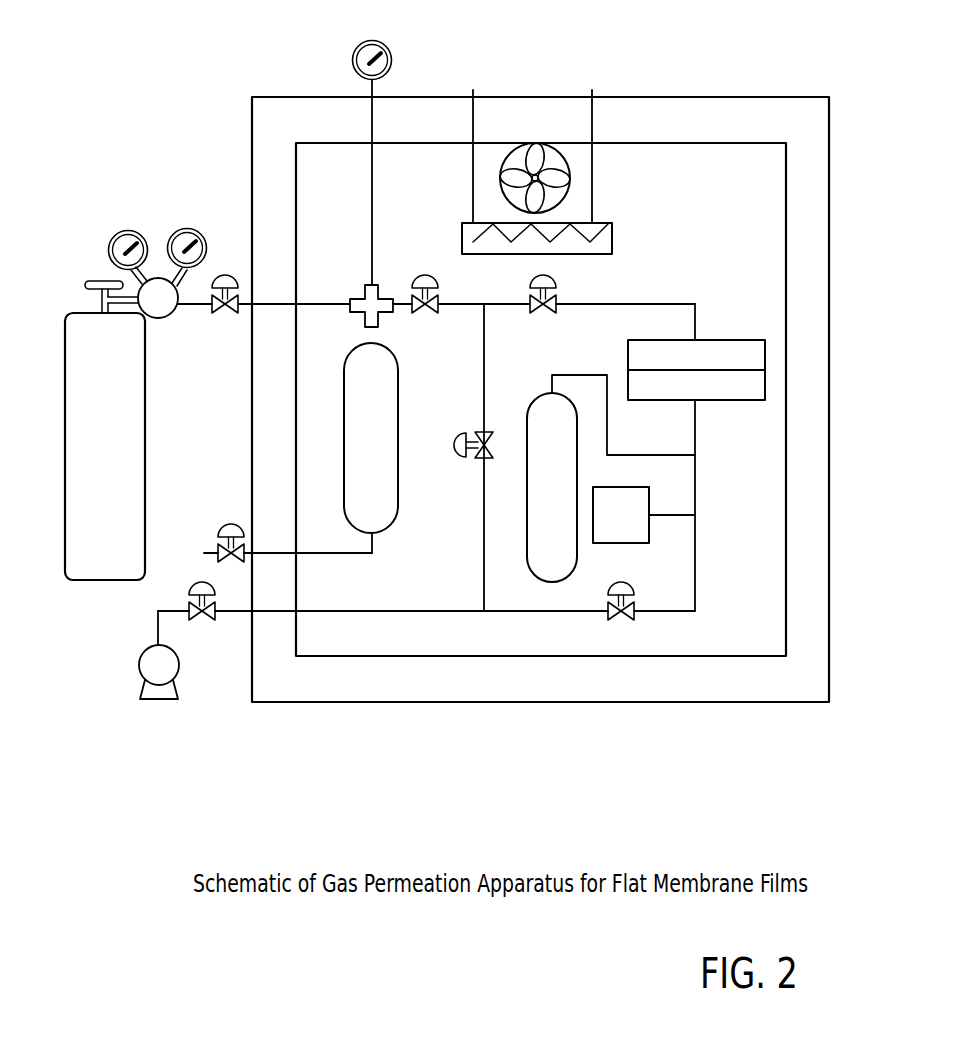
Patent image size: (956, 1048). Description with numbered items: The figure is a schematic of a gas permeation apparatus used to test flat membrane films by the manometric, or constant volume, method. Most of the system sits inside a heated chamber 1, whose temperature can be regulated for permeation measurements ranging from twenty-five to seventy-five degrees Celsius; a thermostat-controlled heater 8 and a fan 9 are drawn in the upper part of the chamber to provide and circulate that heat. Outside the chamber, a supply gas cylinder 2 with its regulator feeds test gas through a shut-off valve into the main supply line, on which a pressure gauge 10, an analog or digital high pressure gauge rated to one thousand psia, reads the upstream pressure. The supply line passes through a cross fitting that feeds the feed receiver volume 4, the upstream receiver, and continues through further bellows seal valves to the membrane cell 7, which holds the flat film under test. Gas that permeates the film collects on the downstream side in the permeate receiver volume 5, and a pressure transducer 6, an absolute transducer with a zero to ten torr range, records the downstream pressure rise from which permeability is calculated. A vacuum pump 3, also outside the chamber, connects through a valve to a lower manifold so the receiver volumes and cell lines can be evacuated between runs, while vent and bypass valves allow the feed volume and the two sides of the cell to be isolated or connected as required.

The heated chamber 1 is at (816, 148).
The supply gas cylinder 2 is at (121, 405).
The vacuum pump 3 is at (138, 680).
The feed receiver volume 4 is at (365, 451).
The permeate receiver volume 5 is at (542, 497).
The pressure transducer 6 is at (614, 529).
The membrane cell 7 is at (714, 339).
The thermostat-controlled heater 8 is at (612, 243).
The fan 9 is at (498, 187).
The pressure gauge 10 is at (351, 62).